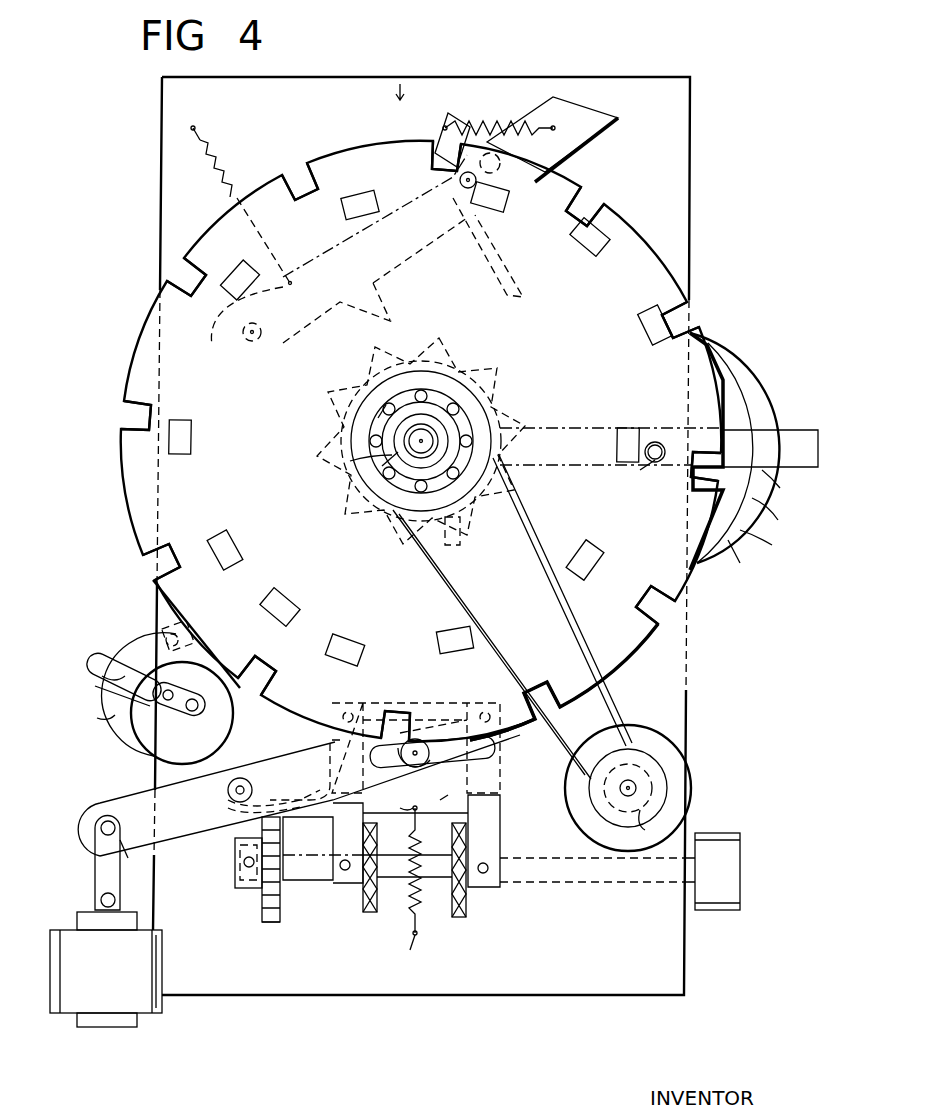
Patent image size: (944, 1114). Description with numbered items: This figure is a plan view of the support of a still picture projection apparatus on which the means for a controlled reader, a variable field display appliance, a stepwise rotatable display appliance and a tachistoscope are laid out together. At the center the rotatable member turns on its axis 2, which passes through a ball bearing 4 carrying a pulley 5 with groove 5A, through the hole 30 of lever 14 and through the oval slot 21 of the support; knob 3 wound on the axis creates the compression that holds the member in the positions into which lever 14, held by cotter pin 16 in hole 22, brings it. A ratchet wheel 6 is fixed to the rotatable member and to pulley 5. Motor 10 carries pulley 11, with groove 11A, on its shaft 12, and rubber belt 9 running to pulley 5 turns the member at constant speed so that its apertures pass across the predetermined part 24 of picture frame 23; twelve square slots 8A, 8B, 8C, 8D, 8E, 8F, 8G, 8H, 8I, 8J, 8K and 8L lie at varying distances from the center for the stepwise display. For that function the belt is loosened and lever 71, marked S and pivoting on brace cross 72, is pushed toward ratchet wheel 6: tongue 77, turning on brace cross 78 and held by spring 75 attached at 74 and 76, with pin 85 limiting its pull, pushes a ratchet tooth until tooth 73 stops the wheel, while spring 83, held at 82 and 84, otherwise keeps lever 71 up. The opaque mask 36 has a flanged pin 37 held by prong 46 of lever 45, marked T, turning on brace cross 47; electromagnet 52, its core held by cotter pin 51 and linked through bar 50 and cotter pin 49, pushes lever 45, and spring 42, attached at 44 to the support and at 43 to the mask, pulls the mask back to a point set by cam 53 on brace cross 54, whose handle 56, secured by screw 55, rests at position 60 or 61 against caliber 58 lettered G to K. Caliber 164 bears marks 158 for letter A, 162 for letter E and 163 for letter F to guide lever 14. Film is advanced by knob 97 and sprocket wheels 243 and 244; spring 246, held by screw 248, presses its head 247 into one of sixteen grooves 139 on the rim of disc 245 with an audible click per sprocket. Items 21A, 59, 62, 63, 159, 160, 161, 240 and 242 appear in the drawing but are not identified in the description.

The axis 2 is at (440, 442).
The knob 3 is at (390, 476).
The ball bearing 4 is at (445, 410).
The pulley 5 is at (365, 449).
The groove 5A is at (382, 403).
The ratchet wheel 6 is at (352, 385).
The rubber belt 9 is at (532, 527).
The motor 10 is at (632, 730).
The pulley 11 is at (668, 765).
The groove 11A is at (618, 808).
The shaft 12 is at (636, 786).
The lever 14 is at (570, 422).
The cotter pin 16 is at (660, 440).
The oval slot 21 is at (445, 362).
The cam lobe 21A is at (478, 560).
The hole 22 is at (648, 462).
The picture frame 23 is at (444, 805).
The predetermined part of picture frame 24 is at (442, 708).
The hole 30 is at (688, 290).
The opaque mask 36 is at (462, 710).
The flanged pin 37 is at (432, 759).
The spring 42 is at (403, 870).
The spring attachment point 43 is at (395, 805).
The spring attachment point 44 is at (397, 947).
The lever 45 is at (180, 790).
The prong 46 is at (405, 762).
The brace cross 47 is at (270, 778).
The cotter pin 49 is at (119, 851).
The bar 50 is at (133, 857).
The cotter pin 51 is at (130, 900).
The electromagnet 52 is at (165, 968).
The cam 53 is at (218, 718).
The brace cross 54 is at (182, 716).
The screw 55 is at (198, 696).
The handle 56 is at (165, 690).
The caliber 58 is at (128, 748).
The dial index 59 is at (93, 715).
The caliber position 60 is at (101, 690).
The caliber position 61 is at (135, 655).
The stop 62 is at (160, 630).
The pawl arm 63 is at (183, 632).
The lever 71 is at (316, 315).
The brace cross 72 is at (255, 328).
The tooth 73 is at (395, 305).
The spring attachment point 74 is at (562, 132).
The spring 75 is at (502, 118).
The spring attachment point 76 is at (448, 122).
The tongue 77 is at (512, 245).
The brace cross 78 is at (460, 188).
The spring attachment point 82 is at (195, 125).
The spring 83 is at (228, 192).
The spring attachment point 84 is at (290, 288).
The pin 85 is at (494, 168).
The knob 97 is at (737, 860).
The groove 139 is at (398, 98).
The arrow 158 is at (748, 392).
The pointer 159 is at (770, 433).
The shaft 160 is at (770, 448).
The scale mark 161 is at (793, 486).
The caliber mark 162 is at (788, 515).
The caliber mark 163 is at (775, 542).
The caliber 164 is at (750, 560).
The bearing block 240 is at (236, 875).
The shaft 242 is at (610, 875).
The sprocket wheel 243 is at (467, 903).
The sprocket wheel 244 is at (362, 905).
The disc 245 is at (265, 917).
The spring 246 is at (274, 788).
The head 247 is at (270, 806).
The screw 248 is at (326, 745).
The square slot 8A is at (625, 432).
The square slot 8B is at (593, 565).
The square slot 8C is at (450, 636).
The square slot 8D is at (344, 648).
The square slot 8E is at (290, 606).
The square slot 8F is at (238, 550).
The square slot 8G is at (192, 432).
The square slot 8H is at (245, 270).
The square slot 8I is at (347, 205).
The square slot 8J is at (507, 200).
The square slot 8K is at (590, 245).
The square slot 8L is at (640, 332).